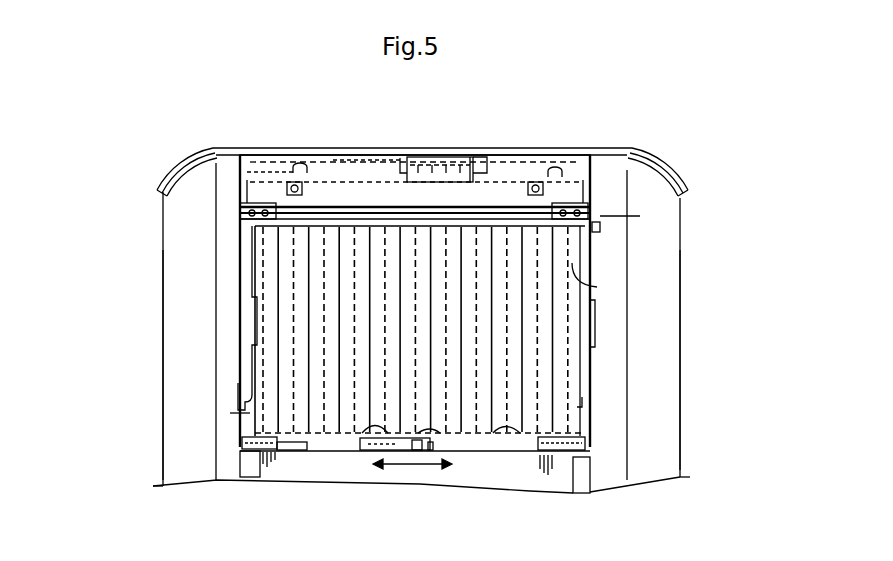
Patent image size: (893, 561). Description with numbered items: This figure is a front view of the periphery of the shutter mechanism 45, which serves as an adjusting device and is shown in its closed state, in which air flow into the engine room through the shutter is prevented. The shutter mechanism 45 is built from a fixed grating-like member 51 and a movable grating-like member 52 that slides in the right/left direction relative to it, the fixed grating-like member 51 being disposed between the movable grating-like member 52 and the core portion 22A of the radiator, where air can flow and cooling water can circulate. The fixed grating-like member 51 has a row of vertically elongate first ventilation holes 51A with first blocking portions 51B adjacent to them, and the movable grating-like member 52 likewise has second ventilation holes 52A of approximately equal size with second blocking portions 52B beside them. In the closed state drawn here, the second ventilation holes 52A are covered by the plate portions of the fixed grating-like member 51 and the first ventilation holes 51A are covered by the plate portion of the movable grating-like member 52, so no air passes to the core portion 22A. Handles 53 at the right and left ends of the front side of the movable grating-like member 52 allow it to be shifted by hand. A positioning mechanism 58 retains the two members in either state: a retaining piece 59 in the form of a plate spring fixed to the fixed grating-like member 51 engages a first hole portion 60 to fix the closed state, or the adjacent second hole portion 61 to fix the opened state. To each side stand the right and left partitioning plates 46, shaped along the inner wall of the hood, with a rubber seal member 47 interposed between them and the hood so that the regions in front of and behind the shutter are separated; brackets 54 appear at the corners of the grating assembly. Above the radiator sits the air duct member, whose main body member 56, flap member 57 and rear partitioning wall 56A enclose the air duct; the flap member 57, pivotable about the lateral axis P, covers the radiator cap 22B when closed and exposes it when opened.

The shutter mechanism 45 is at (123, 184).
The rubber seal member 47 is at (178, 162).
The partitioning plates 46 is at (165, 242).
The main body member 56 is at (268, 157).
The core portion 22A is at (332, 173).
The cap 22B is at (425, 157).
The flap member 57 is at (472, 155).
The lateral axis P is at (640, 161).
The rear partitioning wall 56A is at (640, 216).
The bracket 54 is at (242, 208).
The movable grating-like member 52 is at (257, 240).
The second ventilation holes 52A is at (597, 287).
The second blocking portions 52B is at (560, 340).
The handles 53 is at (250, 322).
The fixed grating-like member 51 is at (247, 413).
The first ventilation holes 51A is at (567, 408).
The first blocking portions 51B is at (510, 432).
The positioning mechanism 58 is at (366, 457).
The retaining piece 59 is at (362, 430).
The first hole portion 60 is at (440, 443).
The second hole portion 61 is at (440, 452).